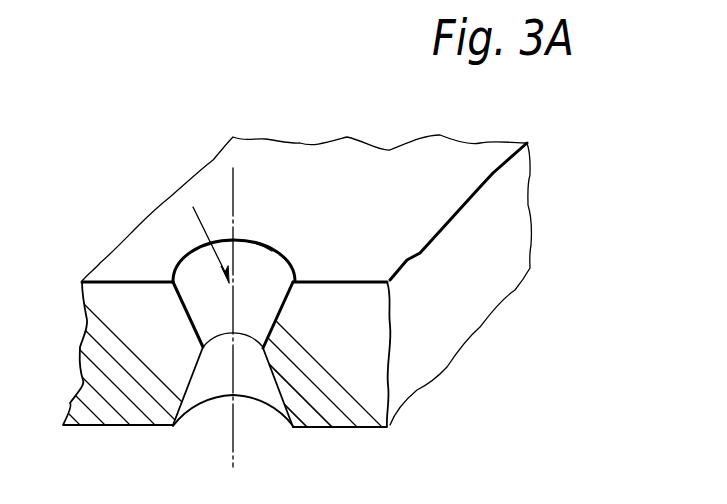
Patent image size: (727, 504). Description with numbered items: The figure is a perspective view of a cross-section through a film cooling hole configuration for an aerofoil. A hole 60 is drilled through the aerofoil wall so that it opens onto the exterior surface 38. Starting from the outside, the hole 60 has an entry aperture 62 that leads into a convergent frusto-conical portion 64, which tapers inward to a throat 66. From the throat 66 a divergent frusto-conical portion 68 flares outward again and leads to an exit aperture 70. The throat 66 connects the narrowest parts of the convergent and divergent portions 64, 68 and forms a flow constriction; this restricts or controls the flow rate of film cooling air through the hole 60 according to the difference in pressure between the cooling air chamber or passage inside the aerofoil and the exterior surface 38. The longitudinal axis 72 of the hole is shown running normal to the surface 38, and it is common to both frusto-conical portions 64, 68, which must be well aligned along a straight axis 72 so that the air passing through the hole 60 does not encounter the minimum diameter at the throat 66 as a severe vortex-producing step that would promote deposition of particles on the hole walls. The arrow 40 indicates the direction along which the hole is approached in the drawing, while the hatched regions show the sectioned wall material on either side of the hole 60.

The exterior surface 38 is at (343, 428).
The laser beam 40 is at (201, 222).
The hole 60 is at (285, 246).
The entry aperture 62 is at (257, 237).
The convergent frusto-conical portion 64 is at (278, 278).
The throat 66 is at (248, 333).
The divergent frusto-conical portion 68 is at (250, 418).
The exit aperture 70 is at (206, 424).
The longitudinal axis 72 is at (232, 185).